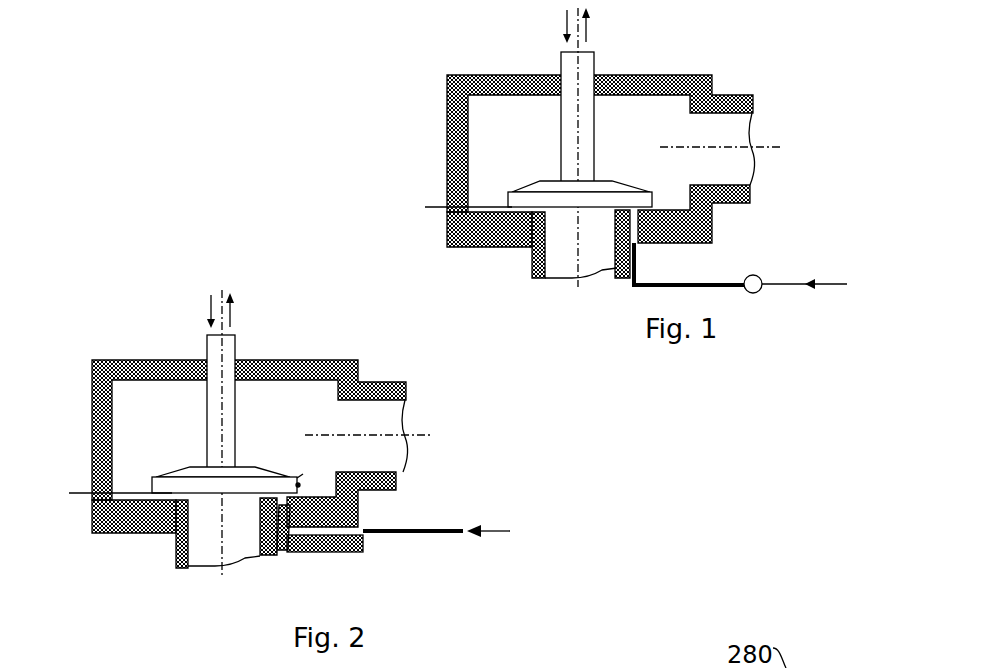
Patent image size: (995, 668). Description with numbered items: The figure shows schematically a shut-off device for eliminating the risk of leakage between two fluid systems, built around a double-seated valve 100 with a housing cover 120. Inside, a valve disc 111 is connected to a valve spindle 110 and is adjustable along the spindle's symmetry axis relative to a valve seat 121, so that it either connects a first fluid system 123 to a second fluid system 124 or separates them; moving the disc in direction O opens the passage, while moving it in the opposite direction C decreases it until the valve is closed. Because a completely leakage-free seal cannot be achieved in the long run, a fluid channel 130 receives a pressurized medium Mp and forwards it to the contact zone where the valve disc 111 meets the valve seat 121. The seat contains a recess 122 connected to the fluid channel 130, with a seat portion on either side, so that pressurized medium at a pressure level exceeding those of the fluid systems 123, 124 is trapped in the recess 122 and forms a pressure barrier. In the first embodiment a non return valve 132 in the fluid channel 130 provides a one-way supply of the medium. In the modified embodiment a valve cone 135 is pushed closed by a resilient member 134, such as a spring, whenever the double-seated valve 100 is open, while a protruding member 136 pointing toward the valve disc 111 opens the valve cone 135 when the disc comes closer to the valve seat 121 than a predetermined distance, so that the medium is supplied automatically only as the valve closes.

In FIG. 1, the double-seated valve 100 is at (437, 75).
In FIG. 2, the double-seated valve 100 is at (125, 342).
In FIG. 1, the valve spindle 110 is at (594, 66).
In FIG. 2, the valve spindle 110 is at (237, 352).
In FIG. 1, the valve disc 111 is at (556, 176).
In FIG. 2, the valve disc 111 is at (200, 465).
In FIG. 1, the housing cover 120 is at (448, 158).
In FIG. 2, the housing cover 120 is at (93, 442).
In FIG. 1, the valve seat 121 is at (483, 248).
In FIG. 2, the valve seat 121 is at (128, 535).
In FIG. 1, the recess 122 is at (521, 252).
In FIG. 2, the recess 122 is at (163, 537).
In FIG. 1, the first fluid system 123 is at (740, 131).
In FIG. 2, the first fluid system 123 is at (392, 418).
In FIG. 1, the second fluid system 124 is at (558, 266).
In FIG. 2, the second fluid system 124 is at (207, 551).
In FIG. 1, the fluid channel 130 is at (652, 249).
In FIG. 2, the fluid channel 130 is at (341, 549).
In FIG. 1, the non return valve 132 is at (758, 275).
In FIG. 2, the resilient member 134 is at (290, 551).
In FIG. 2, the valve cone 135 is at (273, 545).
In FIG. 2, the protruding member 136 is at (303, 476).